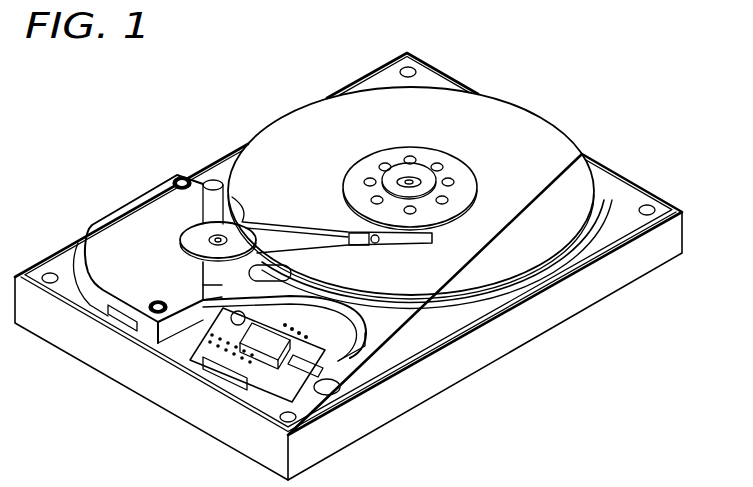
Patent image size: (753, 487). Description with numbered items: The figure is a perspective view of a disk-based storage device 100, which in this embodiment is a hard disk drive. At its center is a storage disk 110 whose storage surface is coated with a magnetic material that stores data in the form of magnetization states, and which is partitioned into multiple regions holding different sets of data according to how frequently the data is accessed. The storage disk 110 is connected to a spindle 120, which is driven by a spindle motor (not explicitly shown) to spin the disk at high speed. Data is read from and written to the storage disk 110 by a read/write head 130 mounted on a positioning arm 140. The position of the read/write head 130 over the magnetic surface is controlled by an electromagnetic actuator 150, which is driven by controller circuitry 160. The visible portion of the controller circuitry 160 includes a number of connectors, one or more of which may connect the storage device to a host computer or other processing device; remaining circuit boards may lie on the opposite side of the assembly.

The disk-based storage device 100 is at (143, 100).
The storage disk 110 is at (520, 120).
The spindle 120 is at (427, 180).
The read/write head 130 is at (400, 235).
The positioning arm 140 is at (280, 230).
The electromagnetic actuator 150 is at (118, 228).
The controller circuitry 160 is at (220, 373).